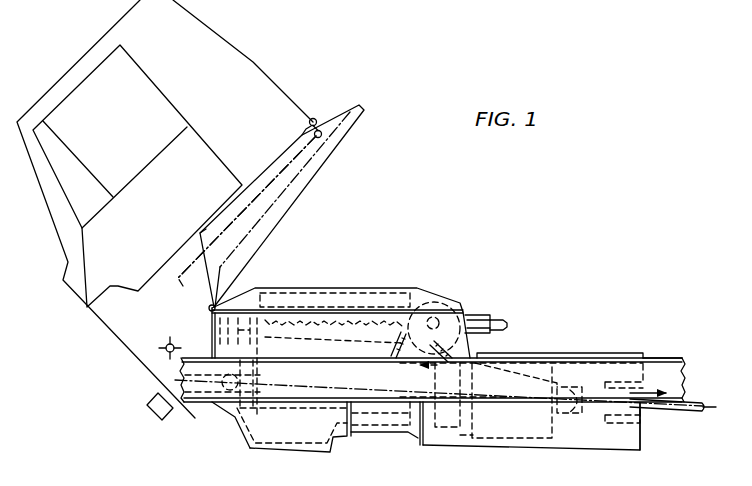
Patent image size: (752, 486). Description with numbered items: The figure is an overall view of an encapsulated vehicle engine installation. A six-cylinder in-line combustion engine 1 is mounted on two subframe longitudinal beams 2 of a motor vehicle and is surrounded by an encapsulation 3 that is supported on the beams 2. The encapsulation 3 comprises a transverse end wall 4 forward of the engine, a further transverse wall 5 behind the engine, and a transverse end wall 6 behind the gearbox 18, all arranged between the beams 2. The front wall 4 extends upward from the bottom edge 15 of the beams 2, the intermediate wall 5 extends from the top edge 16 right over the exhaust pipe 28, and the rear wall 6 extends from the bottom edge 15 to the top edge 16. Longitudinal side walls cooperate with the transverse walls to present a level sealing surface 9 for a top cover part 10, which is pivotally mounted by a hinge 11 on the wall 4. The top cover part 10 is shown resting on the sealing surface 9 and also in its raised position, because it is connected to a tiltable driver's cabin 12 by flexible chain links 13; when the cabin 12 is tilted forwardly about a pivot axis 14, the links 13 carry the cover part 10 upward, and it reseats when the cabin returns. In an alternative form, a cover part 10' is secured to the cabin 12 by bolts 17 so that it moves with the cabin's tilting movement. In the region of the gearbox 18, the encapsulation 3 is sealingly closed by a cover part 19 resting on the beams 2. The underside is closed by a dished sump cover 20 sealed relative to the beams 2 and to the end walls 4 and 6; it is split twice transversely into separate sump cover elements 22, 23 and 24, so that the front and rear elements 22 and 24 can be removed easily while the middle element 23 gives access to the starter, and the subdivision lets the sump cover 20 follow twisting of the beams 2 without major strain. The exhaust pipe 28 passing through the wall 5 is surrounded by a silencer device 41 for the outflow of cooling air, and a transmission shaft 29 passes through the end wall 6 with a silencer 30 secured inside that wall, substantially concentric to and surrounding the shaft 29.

The combustion engine 1 is at (362, 350).
The subframe longitudinal beams 2 is at (672, 366).
The encapsulation 3 is at (310, 286).
The transverse end wall 4 is at (210, 337).
The transverse wall 5 is at (472, 347).
The transverse end wall 6 is at (643, 437).
The sealing surface 9 is at (412, 306).
The top cover part 10 is at (294, 224).
The cover part 10' is at (269, 207).
The hinge 11 is at (209, 307).
The driver's cabin 12 is at (265, 118).
The chain links 13 is at (319, 120).
The pivot axis 14 is at (166, 352).
The bottom edge 15 is at (203, 402).
The top edge 16 is at (657, 357).
The bolts 17 is at (316, 135).
The gearbox 18 is at (540, 383).
The cover part 19 is at (590, 353).
The dished sump cover 20 is at (257, 455).
The sump cover element 22 is at (293, 435).
The middle sump cover element 23 is at (382, 427).
The sump cover element 24 is at (578, 433).
The exhaust pipe 28 is at (500, 320).
The transmission shaft 29 is at (694, 411).
The silencer 30 is at (620, 423).
The silencer device 41 is at (478, 313).